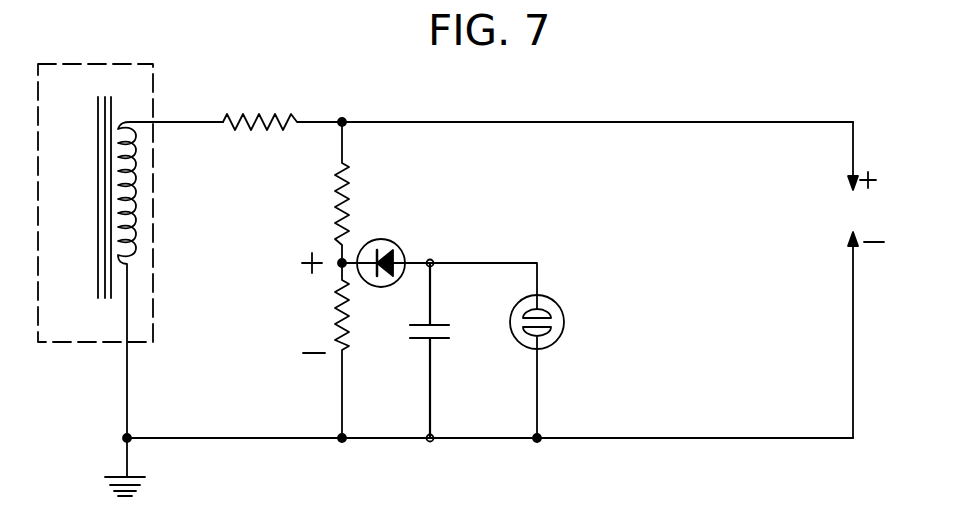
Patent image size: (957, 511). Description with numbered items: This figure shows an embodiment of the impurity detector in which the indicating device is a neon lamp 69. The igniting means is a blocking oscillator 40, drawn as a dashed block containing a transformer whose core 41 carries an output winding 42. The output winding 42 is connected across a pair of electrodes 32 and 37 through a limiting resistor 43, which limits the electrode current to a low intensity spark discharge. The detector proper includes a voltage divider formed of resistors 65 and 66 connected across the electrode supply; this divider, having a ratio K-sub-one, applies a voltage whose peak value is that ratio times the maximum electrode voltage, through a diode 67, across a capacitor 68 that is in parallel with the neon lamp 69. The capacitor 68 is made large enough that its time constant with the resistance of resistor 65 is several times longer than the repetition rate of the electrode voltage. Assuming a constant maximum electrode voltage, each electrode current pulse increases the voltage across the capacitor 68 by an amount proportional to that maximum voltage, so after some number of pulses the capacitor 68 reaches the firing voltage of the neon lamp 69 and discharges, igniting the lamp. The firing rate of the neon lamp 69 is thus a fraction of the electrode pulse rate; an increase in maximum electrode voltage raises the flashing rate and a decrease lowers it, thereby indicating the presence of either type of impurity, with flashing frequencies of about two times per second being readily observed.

The blocking oscillator 40 is at (92, 64).
The transformer core 41 is at (114, 110).
The output winding 42 is at (134, 206).
The limiting resistor 43 is at (262, 116).
The electrode 32 is at (850, 182).
The electrode 37 is at (850, 245).
The resistor 65 is at (340, 204).
The resistor 66 is at (340, 318).
The diode 67 is at (384, 240).
The capacitor 68 is at (449, 332).
The neon lamp 69 is at (556, 302).